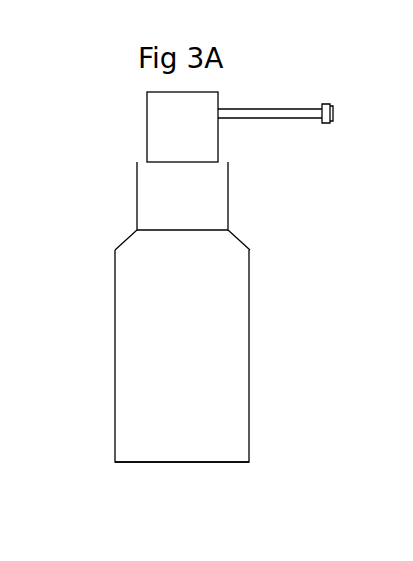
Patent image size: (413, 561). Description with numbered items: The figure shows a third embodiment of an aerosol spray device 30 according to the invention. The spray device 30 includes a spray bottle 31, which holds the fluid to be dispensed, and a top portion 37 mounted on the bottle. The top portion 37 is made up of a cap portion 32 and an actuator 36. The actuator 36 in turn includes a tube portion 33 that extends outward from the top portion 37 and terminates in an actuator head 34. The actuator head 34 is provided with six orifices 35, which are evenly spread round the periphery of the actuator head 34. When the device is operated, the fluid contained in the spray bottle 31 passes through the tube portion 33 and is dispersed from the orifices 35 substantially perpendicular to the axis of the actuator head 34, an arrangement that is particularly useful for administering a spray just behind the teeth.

The aerosol spray device 30 is at (259, 315).
The spray bottle 31 is at (232, 412).
The cap portion 32 is at (215, 213).
The tube portion 33 is at (260, 109).
The actuator head 34 is at (322, 123).
The orifices 35 is at (328, 104).
The actuator 36 is at (247, 118).
The top portion 37 is at (142, 131).